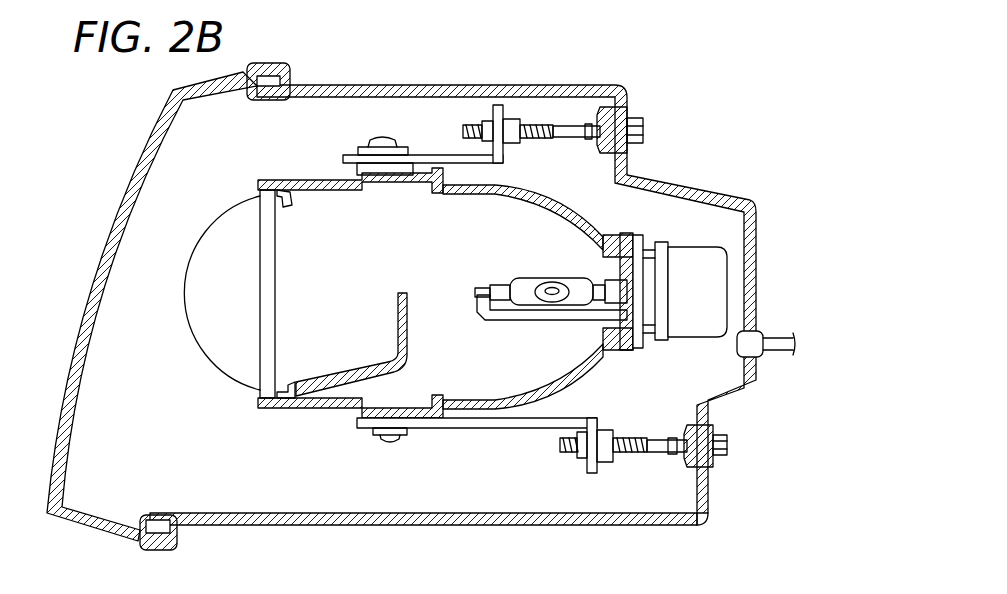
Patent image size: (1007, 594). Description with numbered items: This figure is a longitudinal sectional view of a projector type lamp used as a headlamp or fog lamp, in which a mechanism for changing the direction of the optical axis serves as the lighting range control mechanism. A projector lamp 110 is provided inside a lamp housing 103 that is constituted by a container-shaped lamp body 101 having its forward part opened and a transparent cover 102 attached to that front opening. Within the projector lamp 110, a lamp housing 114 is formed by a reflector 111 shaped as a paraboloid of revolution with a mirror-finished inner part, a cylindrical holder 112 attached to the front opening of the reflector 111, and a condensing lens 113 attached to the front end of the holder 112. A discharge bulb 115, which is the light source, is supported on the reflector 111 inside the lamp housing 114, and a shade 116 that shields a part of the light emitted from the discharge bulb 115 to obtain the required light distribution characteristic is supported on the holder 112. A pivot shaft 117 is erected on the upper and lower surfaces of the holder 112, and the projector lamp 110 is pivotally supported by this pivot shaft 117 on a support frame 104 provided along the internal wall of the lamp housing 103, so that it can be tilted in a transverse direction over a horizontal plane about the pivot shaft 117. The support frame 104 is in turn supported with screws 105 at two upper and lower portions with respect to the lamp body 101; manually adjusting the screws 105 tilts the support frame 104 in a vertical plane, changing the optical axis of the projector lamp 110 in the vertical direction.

The lamp body 101 is at (693, 187).
The transparent cover 102 is at (140, 163).
The lamp housing 103 is at (563, 503).
The support frame 104 is at (453, 157).
The screws 105 is at (645, 130).
The projector lamp 110 is at (283, 162).
The reflector 111 is at (552, 200).
The holder 112 is at (307, 410).
The condensing lens 113 is at (223, 360).
The lamp housing 114 is at (293, 237).
The discharge bulb 115 is at (553, 296).
The shade 116 is at (412, 342).
The pivot shaft 117 is at (392, 143).